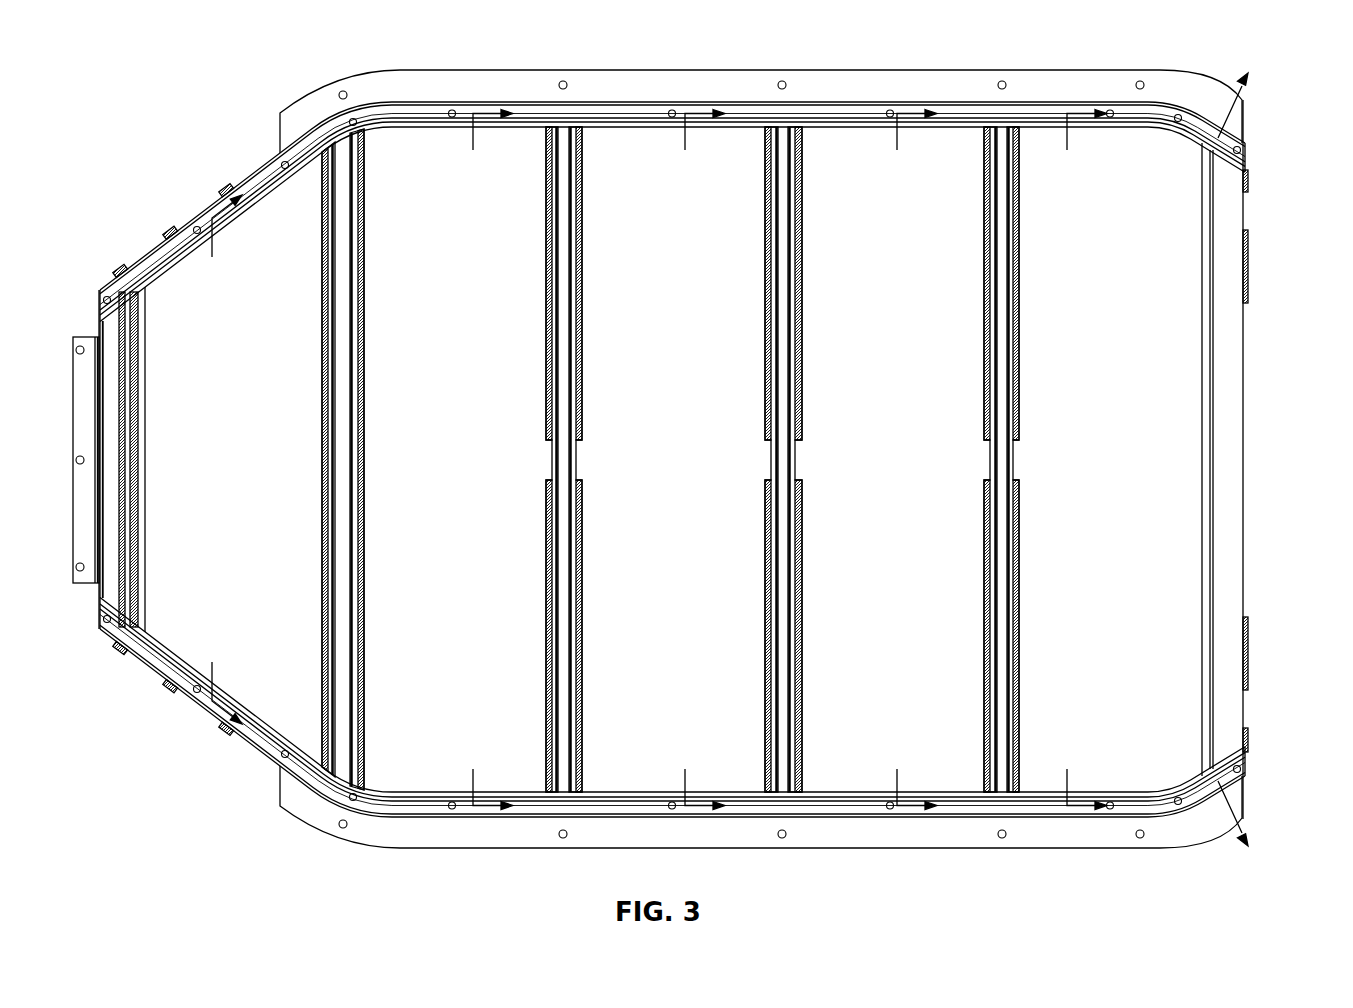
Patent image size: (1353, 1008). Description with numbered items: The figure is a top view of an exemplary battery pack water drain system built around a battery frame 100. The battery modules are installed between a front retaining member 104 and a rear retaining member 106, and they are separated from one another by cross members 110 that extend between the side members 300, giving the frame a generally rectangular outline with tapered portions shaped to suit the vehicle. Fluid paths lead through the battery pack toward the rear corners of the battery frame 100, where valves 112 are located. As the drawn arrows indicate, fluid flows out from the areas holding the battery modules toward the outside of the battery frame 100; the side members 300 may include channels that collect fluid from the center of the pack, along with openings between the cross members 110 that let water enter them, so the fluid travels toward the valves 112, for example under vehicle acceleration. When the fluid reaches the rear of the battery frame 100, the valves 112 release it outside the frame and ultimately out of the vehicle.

The battery frame 100 is at (245, 183).
The front retaining member 104 is at (100, 598).
The rear retaining member 106 is at (1236, 221).
The cross members 110 is at (345, 793).
The valves 112 is at (1213, 121).
The side members 300 is at (493, 72).